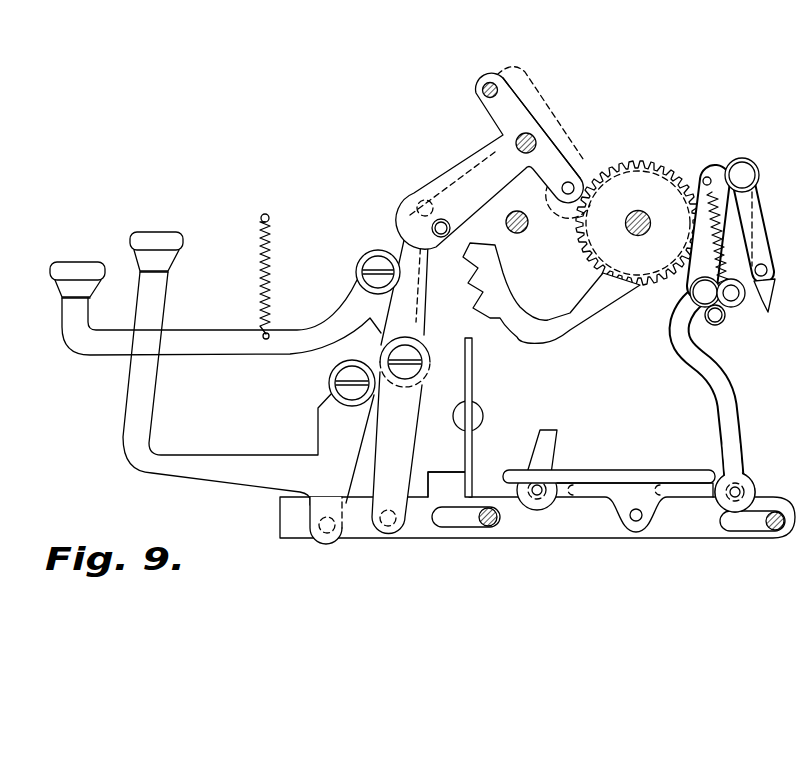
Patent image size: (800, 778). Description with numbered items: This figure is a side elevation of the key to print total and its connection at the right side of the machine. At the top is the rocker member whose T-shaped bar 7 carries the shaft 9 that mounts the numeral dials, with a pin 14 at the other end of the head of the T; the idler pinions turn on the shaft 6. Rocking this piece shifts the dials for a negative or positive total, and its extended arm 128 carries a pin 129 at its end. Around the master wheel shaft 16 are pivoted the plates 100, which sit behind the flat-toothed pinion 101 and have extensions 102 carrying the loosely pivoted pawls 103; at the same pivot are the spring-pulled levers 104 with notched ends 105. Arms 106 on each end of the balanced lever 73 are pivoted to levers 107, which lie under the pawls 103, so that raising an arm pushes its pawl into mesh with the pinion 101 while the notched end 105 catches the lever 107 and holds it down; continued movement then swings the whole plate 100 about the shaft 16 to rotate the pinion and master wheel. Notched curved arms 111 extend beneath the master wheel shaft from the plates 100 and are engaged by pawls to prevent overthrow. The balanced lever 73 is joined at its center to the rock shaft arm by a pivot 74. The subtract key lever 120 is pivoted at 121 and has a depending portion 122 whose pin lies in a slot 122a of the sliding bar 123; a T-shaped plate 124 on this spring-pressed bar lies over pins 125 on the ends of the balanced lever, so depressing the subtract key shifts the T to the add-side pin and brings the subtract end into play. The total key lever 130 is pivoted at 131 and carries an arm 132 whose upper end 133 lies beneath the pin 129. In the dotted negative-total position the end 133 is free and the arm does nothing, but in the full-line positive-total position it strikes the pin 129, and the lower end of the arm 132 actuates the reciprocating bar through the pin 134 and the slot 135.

The shaft 9 is at (490, 82).
The shaft 6 is at (536, 140).
The T-shaped bar 7 is at (541, 128).
The pin 14 is at (572, 184).
The pinion 101 is at (630, 170).
The plates 100 is at (650, 190).
The master wheel shaft 16 is at (645, 218).
The extensions 102 is at (742, 160).
The pawls 103 is at (727, 215).
The spring-pulled levers 104 is at (758, 250).
The notched ends 105 is at (762, 300).
The levers 107 is at (721, 322).
The pin 129 is at (433, 224).
The extended arm 128 is at (493, 158).
The pivot 131 is at (375, 268).
The upper end 133 is at (405, 304).
The notched curved arms 111 is at (551, 293).
The total key lever 130 is at (215, 284).
The pivot 121 is at (344, 392).
The subtract key lever 120 is at (248, 368).
The arm 132 is at (396, 453).
The slot 135 is at (395, 500).
The arms 106 is at (550, 445).
The pins 125 is at (732, 490).
The depending portion 122 is at (330, 500).
The slot 122a is at (386, 522).
The pin 134 is at (418, 530).
The sliding bar 123 is at (440, 505).
The T-shaped plate 124 is at (610, 480).
The pivot 74 is at (636, 520).
The balanced lever 73 is at (657, 515).